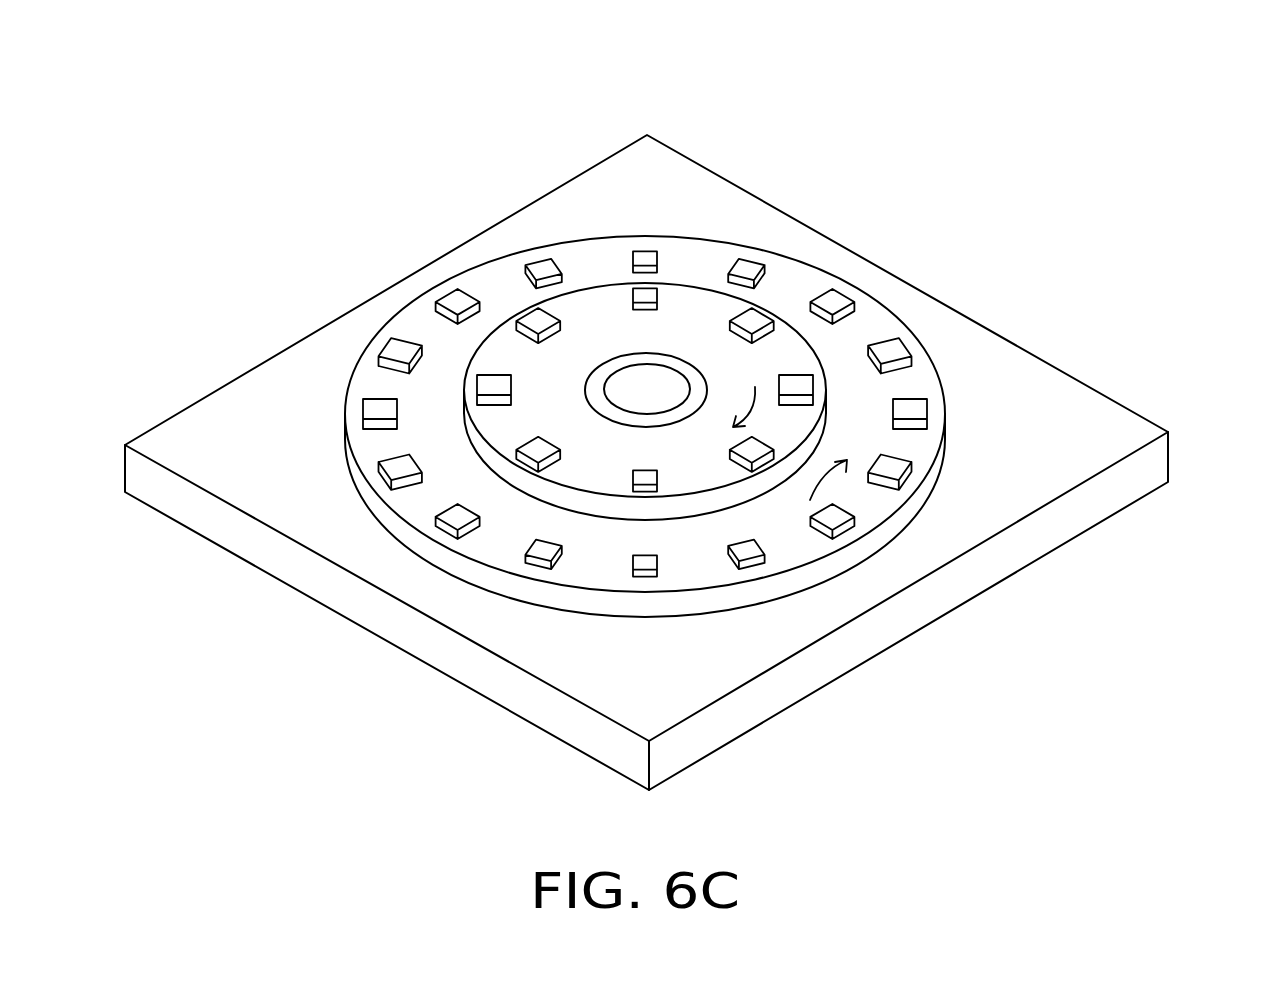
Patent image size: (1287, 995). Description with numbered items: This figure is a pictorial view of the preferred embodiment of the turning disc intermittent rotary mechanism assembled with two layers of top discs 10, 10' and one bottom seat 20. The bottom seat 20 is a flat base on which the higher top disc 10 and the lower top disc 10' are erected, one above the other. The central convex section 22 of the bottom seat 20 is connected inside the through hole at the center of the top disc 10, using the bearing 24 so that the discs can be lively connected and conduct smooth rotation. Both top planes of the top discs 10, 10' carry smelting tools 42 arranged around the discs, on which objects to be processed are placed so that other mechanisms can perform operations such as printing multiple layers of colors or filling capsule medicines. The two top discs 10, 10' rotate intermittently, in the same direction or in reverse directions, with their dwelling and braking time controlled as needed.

The top disc 10 is at (645, 271).
The top disc 10' is at (647, 348).
The bottom seat 20 is at (1025, 403).
The central convex section 22 is at (649, 395).
The bearing 24 is at (700, 382).
The smelting tools 42 is at (647, 252).